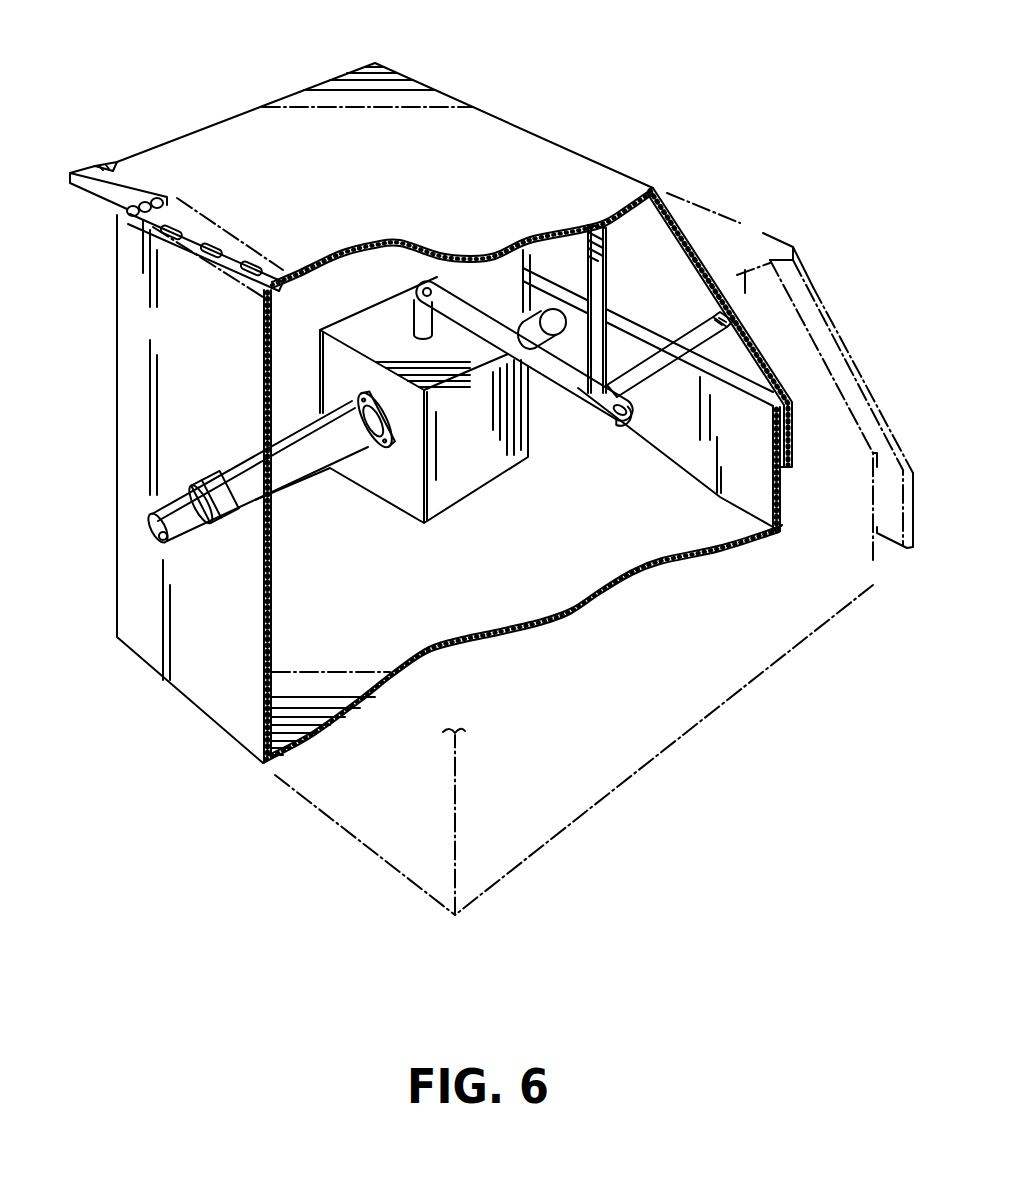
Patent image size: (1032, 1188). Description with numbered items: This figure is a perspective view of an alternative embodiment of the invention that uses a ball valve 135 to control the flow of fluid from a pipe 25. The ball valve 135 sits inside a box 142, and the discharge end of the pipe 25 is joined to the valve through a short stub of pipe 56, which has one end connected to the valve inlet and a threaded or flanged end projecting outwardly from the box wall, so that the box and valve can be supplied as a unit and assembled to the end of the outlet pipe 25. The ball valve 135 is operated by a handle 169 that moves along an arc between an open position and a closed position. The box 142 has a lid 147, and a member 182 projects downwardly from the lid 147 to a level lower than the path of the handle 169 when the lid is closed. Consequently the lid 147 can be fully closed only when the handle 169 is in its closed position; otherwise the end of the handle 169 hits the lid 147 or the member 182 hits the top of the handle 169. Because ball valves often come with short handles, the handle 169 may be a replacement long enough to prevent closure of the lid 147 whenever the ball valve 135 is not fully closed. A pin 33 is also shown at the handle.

The box 142 is at (262, 78).
The lid 147 is at (662, 353).
The member 182 is at (668, 340).
The pin 33 is at (530, 312).
The handle 169 is at (600, 410).
The ball valve 135 is at (470, 468).
The stub of pipe 56 is at (240, 462).
The pipe 25 is at (170, 518).